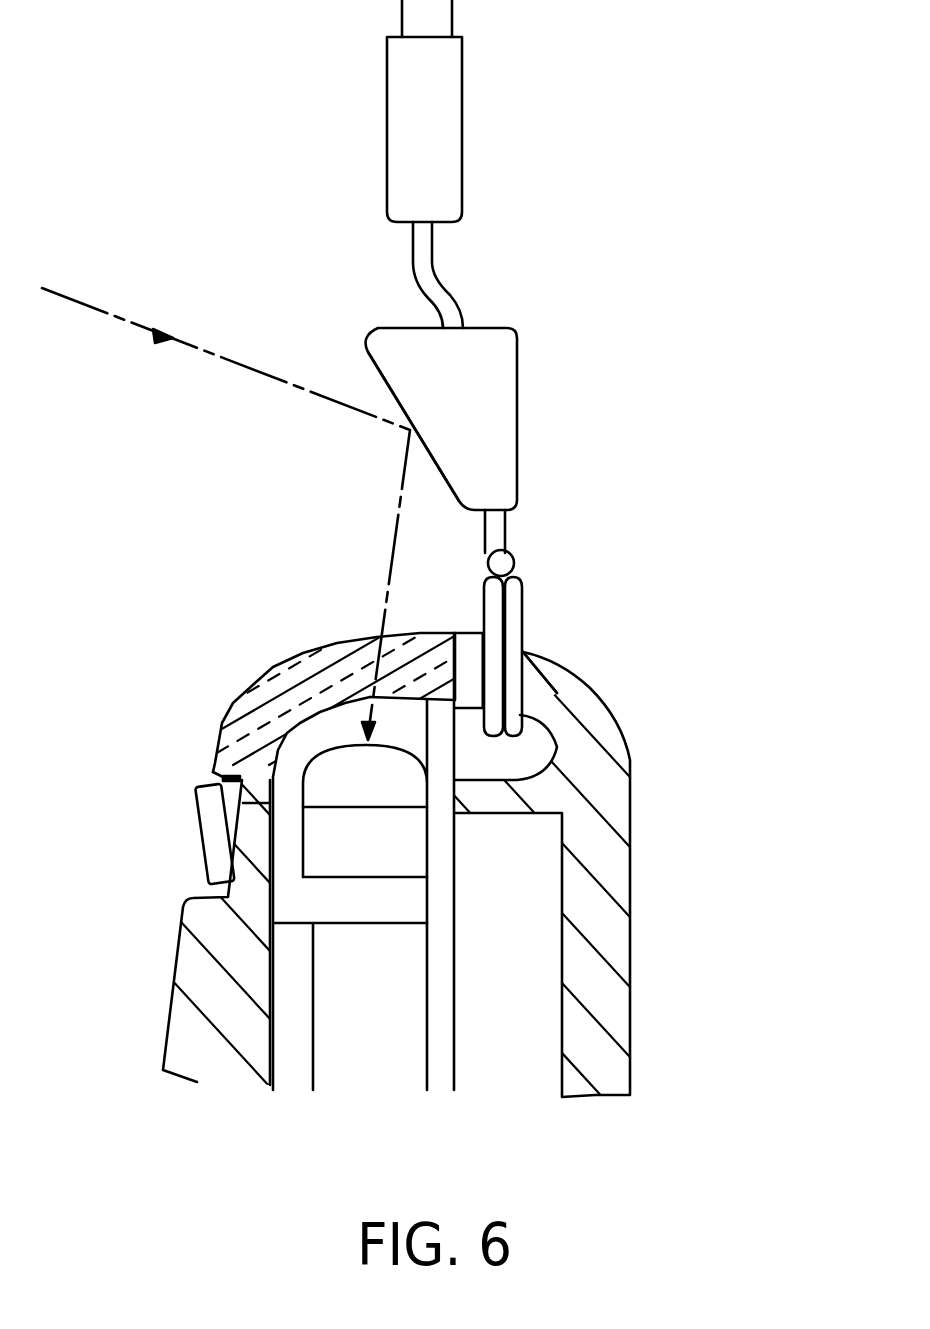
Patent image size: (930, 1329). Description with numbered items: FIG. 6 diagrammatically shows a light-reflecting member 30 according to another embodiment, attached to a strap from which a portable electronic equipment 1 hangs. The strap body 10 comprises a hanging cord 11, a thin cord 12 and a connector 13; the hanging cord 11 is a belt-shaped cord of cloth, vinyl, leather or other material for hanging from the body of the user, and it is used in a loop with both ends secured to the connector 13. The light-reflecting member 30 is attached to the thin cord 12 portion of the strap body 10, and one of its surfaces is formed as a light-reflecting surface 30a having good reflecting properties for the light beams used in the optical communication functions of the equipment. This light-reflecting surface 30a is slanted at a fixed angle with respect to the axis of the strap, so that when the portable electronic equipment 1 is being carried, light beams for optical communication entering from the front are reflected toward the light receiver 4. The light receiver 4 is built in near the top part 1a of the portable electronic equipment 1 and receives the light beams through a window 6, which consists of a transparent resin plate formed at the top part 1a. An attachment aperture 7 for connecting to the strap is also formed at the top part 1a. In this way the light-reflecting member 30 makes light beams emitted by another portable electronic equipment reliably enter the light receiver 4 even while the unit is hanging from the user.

The portable electronic equipment 1 is at (592, 668).
The top part 1a is at (455, 633).
The light receiver 4 is at (320, 740).
The window 6 is at (295, 653).
The attachment aperture 7 is at (527, 753).
The strap body 10 is at (522, 164).
The hanging cord 11 is at (453, 10).
The thin cord 12 is at (485, 256).
The connector 13 is at (462, 137).
The light-reflecting member 30 is at (517, 393).
The light-reflecting surface 30a is at (380, 377).